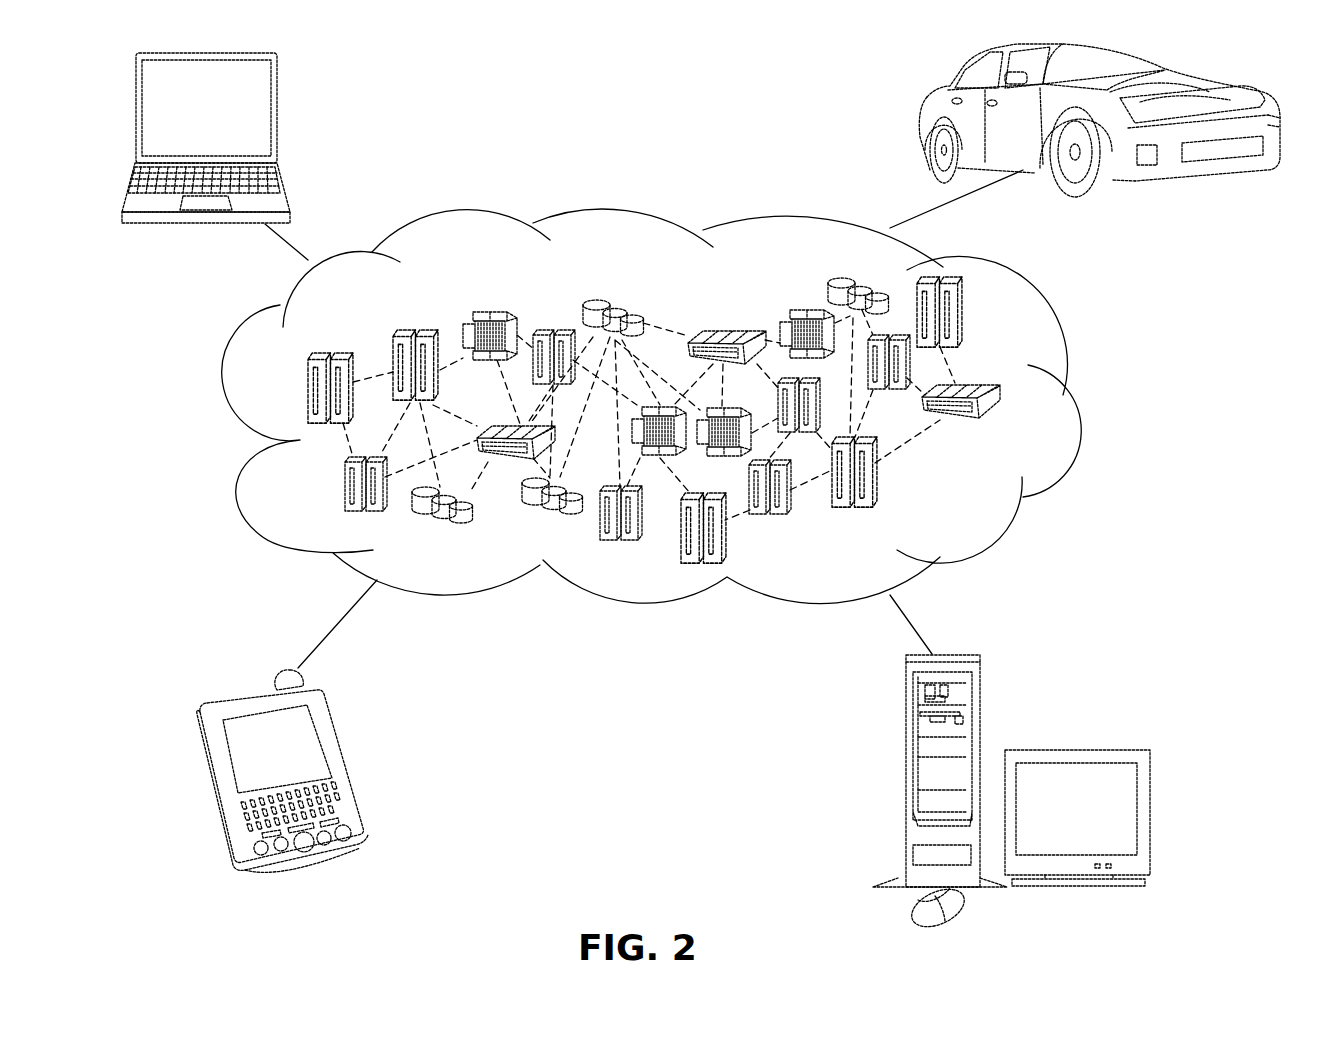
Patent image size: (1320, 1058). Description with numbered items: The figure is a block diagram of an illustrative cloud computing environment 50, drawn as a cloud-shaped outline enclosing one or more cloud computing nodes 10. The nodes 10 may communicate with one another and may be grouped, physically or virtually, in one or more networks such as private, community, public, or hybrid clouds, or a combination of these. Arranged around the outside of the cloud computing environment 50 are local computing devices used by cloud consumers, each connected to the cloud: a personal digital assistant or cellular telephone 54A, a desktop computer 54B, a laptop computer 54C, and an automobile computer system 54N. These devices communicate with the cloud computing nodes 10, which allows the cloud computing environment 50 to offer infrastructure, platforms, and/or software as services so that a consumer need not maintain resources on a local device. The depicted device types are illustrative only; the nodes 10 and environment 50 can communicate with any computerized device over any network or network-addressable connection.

The cloud computing node 10 is at (982, 503).
The cloud computing environment 50 is at (1073, 400).
The personal digital assistant (PDA) or cellular telephone 54A is at (330, 730).
The desktop computer 54B is at (902, 717).
The laptop computer 54C is at (275, 92).
The automobile computer system 54N is at (920, 108).